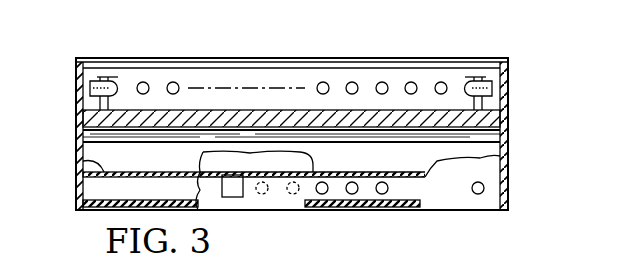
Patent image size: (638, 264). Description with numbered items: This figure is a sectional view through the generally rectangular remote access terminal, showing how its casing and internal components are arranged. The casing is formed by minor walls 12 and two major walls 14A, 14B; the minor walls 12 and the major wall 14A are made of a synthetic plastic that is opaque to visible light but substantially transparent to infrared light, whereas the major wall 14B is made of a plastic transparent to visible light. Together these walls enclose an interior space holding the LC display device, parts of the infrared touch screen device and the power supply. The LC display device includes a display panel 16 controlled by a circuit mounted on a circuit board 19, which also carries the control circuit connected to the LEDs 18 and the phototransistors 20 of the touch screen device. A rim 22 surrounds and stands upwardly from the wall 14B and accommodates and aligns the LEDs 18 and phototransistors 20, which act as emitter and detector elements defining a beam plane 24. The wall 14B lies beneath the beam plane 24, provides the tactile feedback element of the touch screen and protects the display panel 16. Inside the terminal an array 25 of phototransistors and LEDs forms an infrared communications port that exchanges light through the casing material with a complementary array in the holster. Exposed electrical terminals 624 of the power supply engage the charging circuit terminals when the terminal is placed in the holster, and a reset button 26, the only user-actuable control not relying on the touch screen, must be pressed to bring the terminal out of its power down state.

The minor walls 12 is at (76, 114).
The major wall 14A is at (470, 211).
The major wall 14B is at (509, 117).
The display panel 16 is at (509, 166).
The LEDs 18 is at (173, 81).
The circuit board 19 is at (83, 159).
The phototransistors 20 is at (466, 84).
The rim 22 is at (510, 72).
The beam plane 24 is at (256, 86).
The array of phototransistors and LEDs 25 is at (262, 194).
The reset button 26 is at (484, 190).
The electrical terminals 624 is at (245, 196).